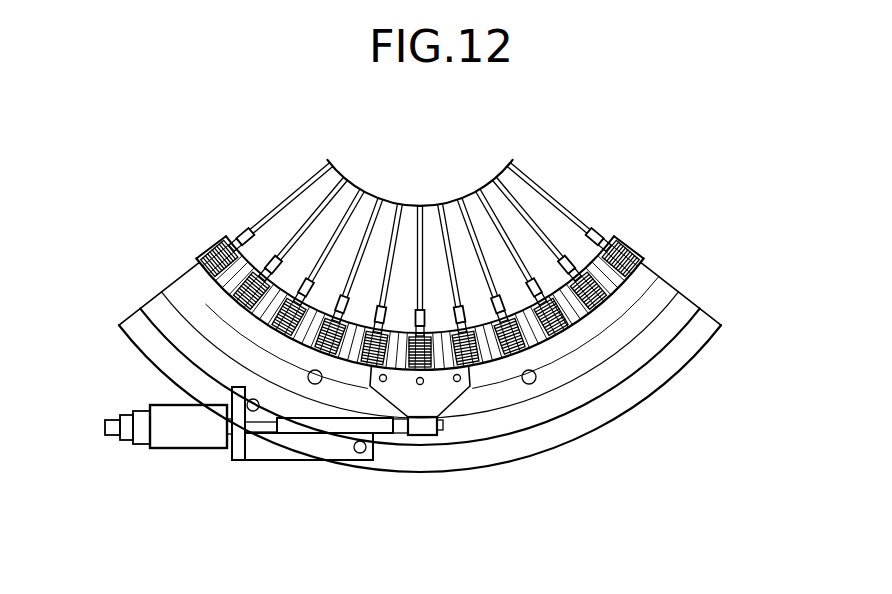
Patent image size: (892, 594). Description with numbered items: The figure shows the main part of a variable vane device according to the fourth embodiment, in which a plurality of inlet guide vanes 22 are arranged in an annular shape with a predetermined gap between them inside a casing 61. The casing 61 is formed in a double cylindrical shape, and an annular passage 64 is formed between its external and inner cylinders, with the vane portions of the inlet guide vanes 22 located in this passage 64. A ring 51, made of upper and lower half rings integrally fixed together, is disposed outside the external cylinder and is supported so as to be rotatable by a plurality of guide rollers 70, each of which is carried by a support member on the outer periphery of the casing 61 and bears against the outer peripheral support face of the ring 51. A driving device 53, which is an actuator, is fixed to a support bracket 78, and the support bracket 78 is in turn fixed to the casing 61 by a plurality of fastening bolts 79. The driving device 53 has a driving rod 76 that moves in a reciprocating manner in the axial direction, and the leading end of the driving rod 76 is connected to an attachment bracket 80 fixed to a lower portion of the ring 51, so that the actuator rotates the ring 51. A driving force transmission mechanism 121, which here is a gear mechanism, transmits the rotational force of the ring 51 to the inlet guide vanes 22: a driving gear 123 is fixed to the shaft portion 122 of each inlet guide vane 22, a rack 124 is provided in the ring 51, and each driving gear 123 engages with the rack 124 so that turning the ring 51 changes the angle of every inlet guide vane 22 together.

The inlet guide vane 22 is at (378, 214).
The annular passage 64 is at (458, 232).
The shaft portion 122 is at (266, 278).
The driving force transmission mechanism 121 is at (636, 247).
The driving gear 123 is at (226, 264).
The ring 51 is at (668, 315).
The casing 61 is at (690, 373).
The guide roller 70 is at (312, 372).
The rack 124 is at (565, 322).
The driving rod 76 is at (420, 427).
The attachment bracket 80 is at (398, 436).
The driving device 53 is at (175, 458).
The support bracket 78 is at (305, 460).
The fastening bolt 79 is at (247, 402).